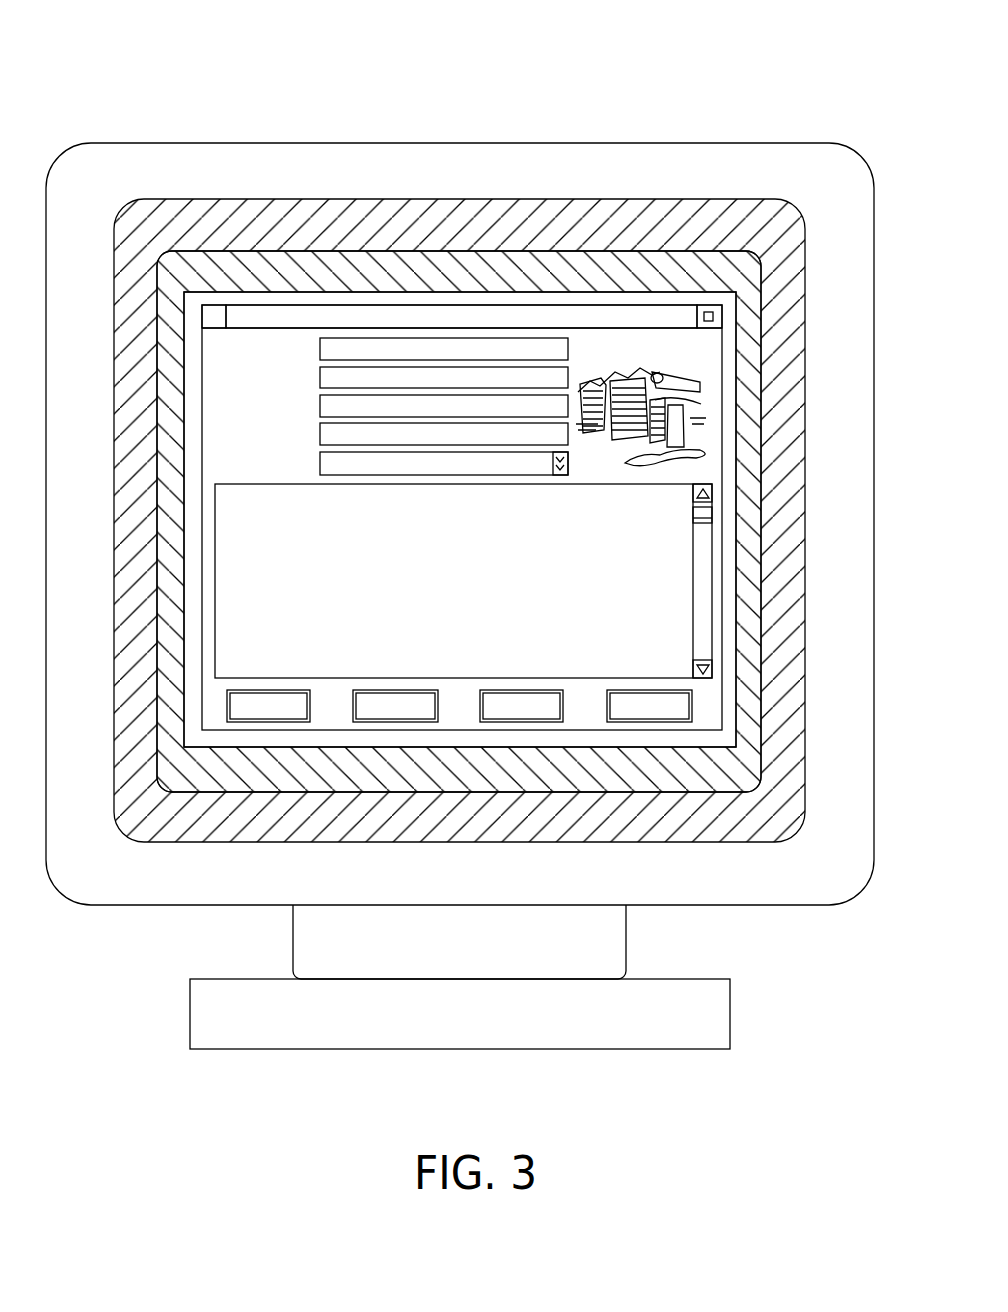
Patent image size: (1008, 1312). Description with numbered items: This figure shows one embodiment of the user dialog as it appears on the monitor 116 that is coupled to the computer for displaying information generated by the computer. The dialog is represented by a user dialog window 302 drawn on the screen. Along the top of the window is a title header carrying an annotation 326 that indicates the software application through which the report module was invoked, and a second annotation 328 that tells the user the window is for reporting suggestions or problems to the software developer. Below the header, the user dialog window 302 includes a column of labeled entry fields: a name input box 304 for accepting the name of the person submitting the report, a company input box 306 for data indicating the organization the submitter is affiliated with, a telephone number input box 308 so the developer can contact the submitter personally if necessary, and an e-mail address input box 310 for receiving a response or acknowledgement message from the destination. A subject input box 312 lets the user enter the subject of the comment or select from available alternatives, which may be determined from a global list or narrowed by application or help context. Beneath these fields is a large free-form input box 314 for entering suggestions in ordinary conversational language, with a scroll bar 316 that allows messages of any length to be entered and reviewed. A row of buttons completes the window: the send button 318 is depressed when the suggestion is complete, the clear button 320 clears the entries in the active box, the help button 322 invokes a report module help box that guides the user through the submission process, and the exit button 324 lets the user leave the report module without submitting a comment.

The monitor 116 is at (218, 906).
The user dialog window 302 is at (723, 348).
The name input box 304 is at (493, 338).
The company input box 306 is at (498, 367).
The telephone number input box 308 is at (530, 395).
The e-mail address input box 310 is at (550, 423).
The subject input box 312 is at (570, 463).
The free-form input box 314 is at (688, 678).
The scroll bar 316 is at (703, 573).
The send button 318 is at (270, 723).
The clear button 320 is at (397, 723).
The help button 322 is at (522, 722).
The exit button 324 is at (647, 723).
The annotation 326 is at (240, 305).
The second annotation 328 is at (442, 305).